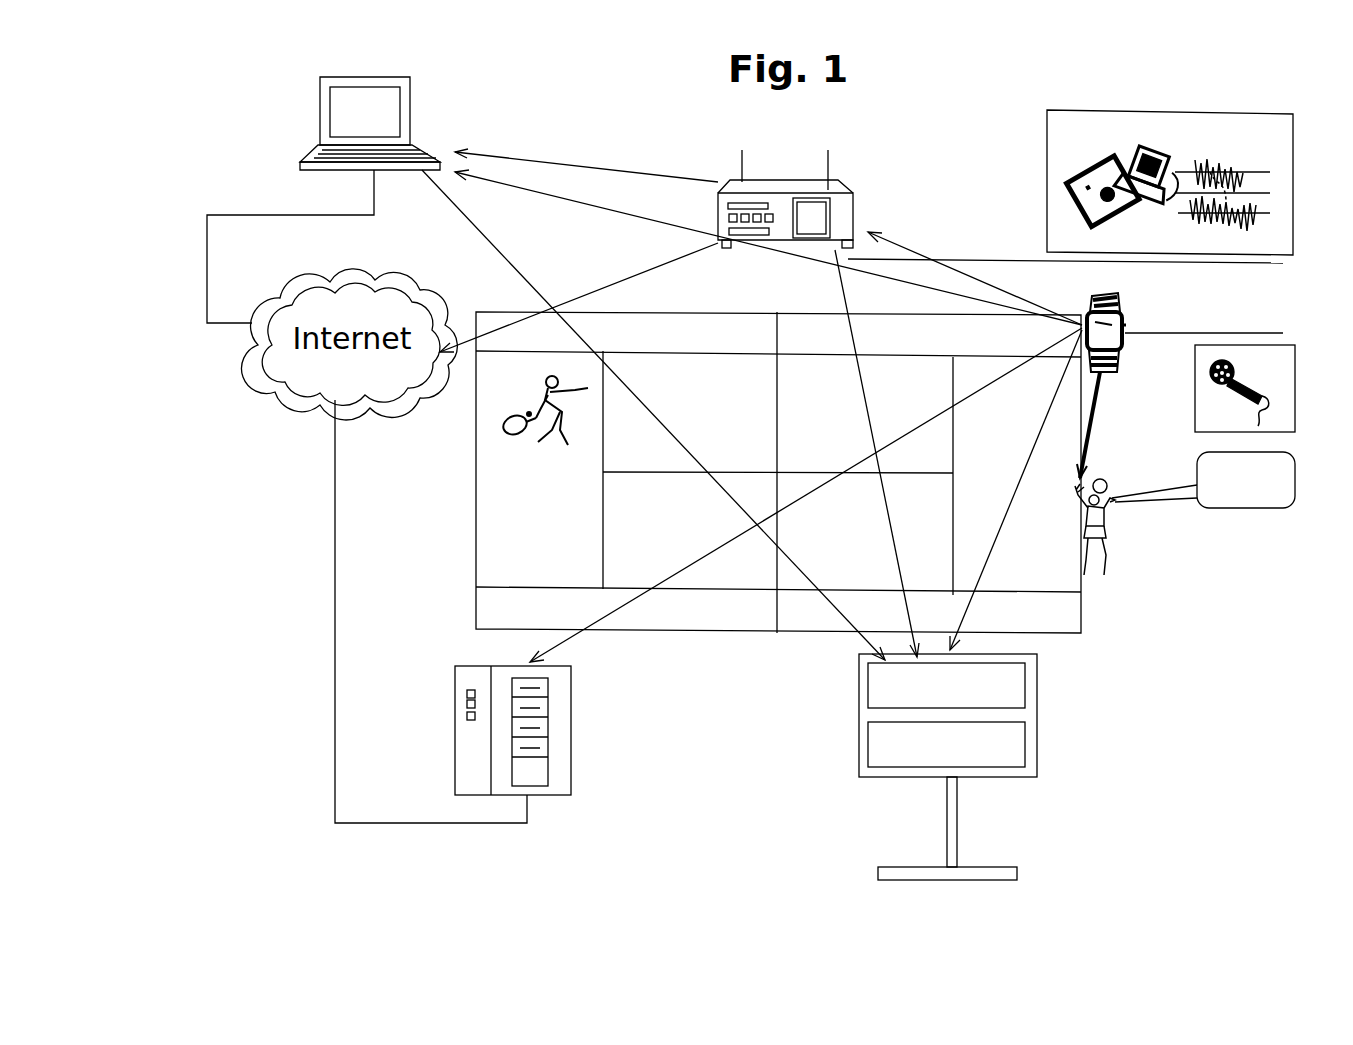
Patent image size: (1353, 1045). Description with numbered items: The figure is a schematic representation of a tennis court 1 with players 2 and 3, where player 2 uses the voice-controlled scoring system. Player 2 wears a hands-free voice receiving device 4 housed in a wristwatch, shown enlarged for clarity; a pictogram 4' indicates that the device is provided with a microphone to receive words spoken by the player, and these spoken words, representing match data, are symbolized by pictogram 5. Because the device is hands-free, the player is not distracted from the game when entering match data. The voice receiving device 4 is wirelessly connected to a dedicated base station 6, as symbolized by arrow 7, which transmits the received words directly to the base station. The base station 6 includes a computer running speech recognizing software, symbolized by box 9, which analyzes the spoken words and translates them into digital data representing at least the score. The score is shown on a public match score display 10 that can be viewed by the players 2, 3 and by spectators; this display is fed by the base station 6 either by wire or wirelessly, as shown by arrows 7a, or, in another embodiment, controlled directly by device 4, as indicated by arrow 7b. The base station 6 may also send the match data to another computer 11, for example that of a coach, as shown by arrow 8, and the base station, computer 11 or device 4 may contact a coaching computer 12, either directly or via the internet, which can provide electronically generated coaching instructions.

The tennis court 1 is at (684, 633).
The player 2 is at (1110, 540).
The player 3 is at (530, 436).
The hands-free voice receiving device 4 is at (1142, 382).
The pictogram 4' is at (1208, 389).
The pictogram 5 is at (1265, 508).
The base station 6 is at (770, 182).
The arrow 7 is at (923, 252).
The arrows 7a is at (886, 550).
The arrow 7b is at (995, 572).
The arrow 8 is at (973, 303).
The box 9 is at (1130, 110).
The public match score display 10 is at (960, 828).
The computer 11 is at (320, 140).
The coaching computer 12 is at (571, 752).